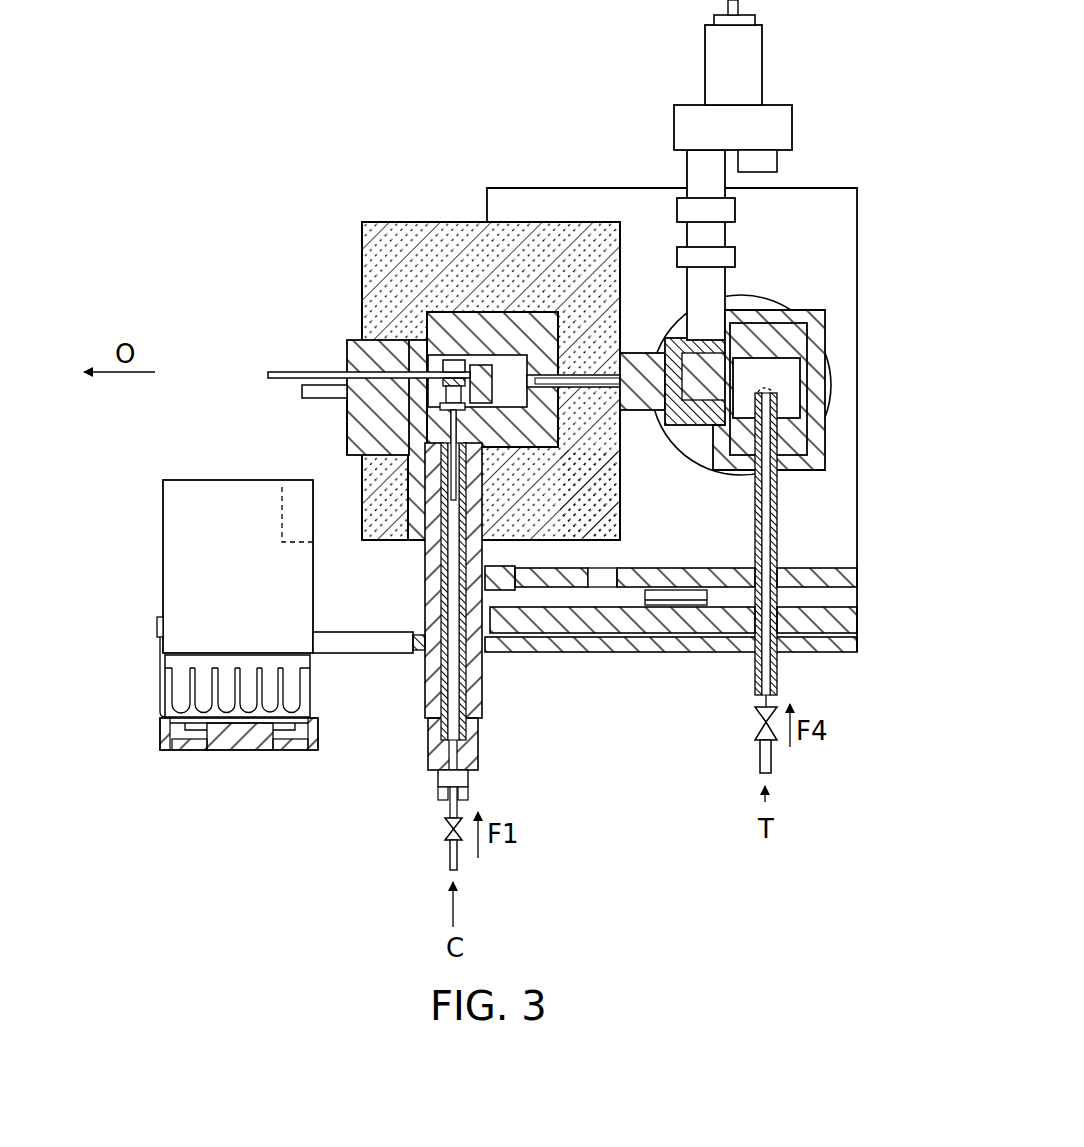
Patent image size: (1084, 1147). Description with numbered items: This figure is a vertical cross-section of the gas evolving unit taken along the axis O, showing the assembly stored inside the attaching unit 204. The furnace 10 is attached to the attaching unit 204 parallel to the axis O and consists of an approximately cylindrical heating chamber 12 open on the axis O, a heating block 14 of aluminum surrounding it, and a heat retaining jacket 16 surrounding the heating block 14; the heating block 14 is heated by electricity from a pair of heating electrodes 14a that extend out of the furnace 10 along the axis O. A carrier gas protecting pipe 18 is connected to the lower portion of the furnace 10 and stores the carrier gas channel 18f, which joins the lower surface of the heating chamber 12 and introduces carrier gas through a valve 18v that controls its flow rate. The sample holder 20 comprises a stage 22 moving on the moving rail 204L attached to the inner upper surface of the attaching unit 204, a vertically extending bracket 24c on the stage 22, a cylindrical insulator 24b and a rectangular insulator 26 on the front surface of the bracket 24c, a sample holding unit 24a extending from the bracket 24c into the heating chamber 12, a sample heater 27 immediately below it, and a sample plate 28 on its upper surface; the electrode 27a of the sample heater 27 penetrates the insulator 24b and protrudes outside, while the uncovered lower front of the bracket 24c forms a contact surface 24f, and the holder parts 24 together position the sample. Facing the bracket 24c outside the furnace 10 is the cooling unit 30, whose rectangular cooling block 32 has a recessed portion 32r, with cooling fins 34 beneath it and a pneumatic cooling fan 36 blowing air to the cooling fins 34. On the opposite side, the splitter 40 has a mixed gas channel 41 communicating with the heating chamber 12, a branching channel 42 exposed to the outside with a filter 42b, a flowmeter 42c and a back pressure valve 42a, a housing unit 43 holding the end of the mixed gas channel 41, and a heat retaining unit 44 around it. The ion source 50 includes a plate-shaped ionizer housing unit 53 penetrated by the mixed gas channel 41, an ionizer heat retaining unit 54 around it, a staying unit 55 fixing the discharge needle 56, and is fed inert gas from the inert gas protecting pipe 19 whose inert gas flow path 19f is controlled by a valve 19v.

The furnace 10 is at (414, 222).
The heating chamber 12 is at (520, 410).
The heating block 14 is at (552, 390).
The heating electrodes 14a is at (302, 392).
The heat retaining jacket 16 is at (630, 460).
The carrier gas protecting pipe 18 is at (449, 640).
The carrier gas channel 18f is at (455, 692).
The valve 18v is at (445, 826).
The inert gas protecting pipe 19 is at (765, 583).
The inert gas flow path 19f is at (767, 665).
The valve 19v is at (755, 680).
The sample holder 20 is at (403, 421).
The stage 22 is at (848, 580).
The holder 24 is at (305, 431).
The sample holding unit 24a is at (496, 363).
The insulator 24b is at (347, 412).
The bracket 24c is at (418, 542).
The contact surface 24f is at (417, 473).
The insulator 26 is at (353, 343).
The sample heater 27 is at (426, 421).
The electrode 27a is at (268, 372).
The sample plate 28 is at (455, 360).
The cooling unit 30 is at (235, 615).
The cooling block 32 is at (256, 598).
The recessed portion 32r is at (295, 508).
The cooling fins 34 is at (168, 686).
The pneumatic cooling fan 36 is at (204, 723).
The splitter 40 is at (758, 212).
The mixed gas channel 41 is at (700, 335).
The branching channel 42 is at (735, 133).
The back pressure valve 42a is at (745, 70).
The filter 42b is at (680, 215).
The flowmeter 42c is at (680, 255).
The housing unit 43 is at (700, 355).
The heat retaining unit 44 is at (648, 385).
The ion source 50 is at (837, 380).
The ionizer housing unit 53 is at (790, 348).
The ionizer heat retaining unit 54 is at (755, 318).
The staying unit 55 is at (788, 405).
The discharge needle 56 is at (772, 378).
The attaching unit for the gas evolving unit 204 is at (850, 510).
The moving rail 204L is at (848, 625).